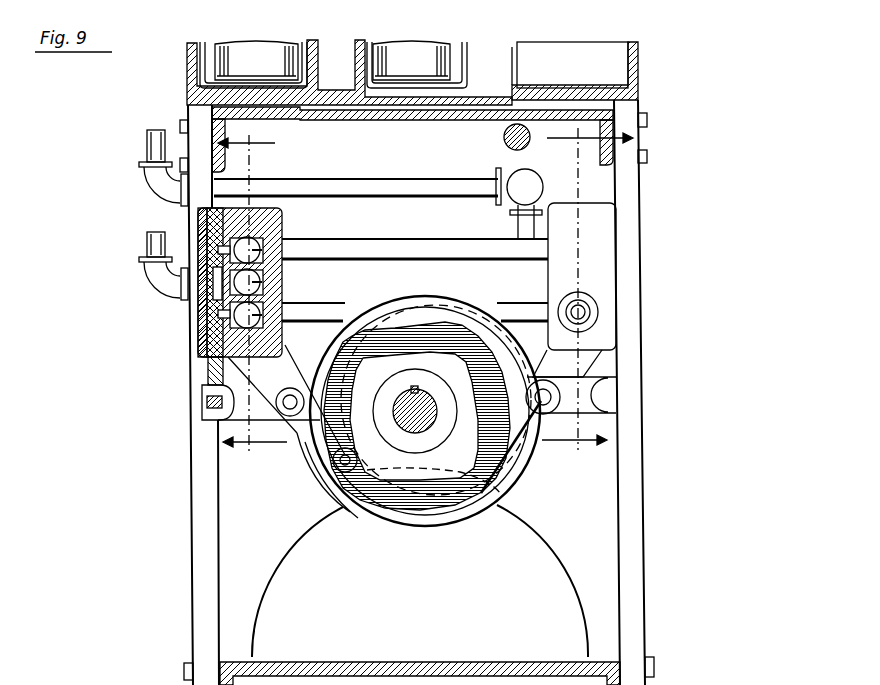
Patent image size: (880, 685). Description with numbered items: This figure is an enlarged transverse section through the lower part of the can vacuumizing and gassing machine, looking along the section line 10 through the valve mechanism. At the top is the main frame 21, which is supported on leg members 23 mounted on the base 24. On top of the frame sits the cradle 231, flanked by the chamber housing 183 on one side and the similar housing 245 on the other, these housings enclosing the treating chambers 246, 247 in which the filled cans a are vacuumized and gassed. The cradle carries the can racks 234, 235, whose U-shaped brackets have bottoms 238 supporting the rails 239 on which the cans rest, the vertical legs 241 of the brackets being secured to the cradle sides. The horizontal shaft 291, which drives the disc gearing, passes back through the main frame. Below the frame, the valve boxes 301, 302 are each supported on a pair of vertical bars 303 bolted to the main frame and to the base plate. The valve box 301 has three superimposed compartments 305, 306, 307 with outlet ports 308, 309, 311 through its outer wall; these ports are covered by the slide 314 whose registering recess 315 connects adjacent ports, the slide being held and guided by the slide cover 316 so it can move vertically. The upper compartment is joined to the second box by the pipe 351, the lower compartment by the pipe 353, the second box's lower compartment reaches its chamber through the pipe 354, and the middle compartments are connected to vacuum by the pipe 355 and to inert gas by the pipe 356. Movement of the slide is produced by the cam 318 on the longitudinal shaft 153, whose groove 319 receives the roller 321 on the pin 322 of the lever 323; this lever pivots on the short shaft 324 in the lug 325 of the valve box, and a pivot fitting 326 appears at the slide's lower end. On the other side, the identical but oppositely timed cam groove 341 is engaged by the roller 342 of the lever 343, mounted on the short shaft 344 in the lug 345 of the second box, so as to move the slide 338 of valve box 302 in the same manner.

The section line 10- 10 is at (425, 303).
The main frame 21 is at (612, 130).
The leg members 23 is at (264, 570).
The base 24 is at (417, 663).
The shaft 153 is at (402, 408).
The chamber housing 183 is at (637, 68).
The cradle 231 is at (360, 41).
The can rack 234 is at (470, 43).
The can rack 235 is at (203, 61).
The bracket bottoms 238 is at (456, 82).
The rails 239 is at (388, 83).
The bracket legs 241 is at (463, 60).
The housing 245 is at (190, 80).
The treating chamber 246 is at (575, 71).
The treating chamber 247 is at (200, 44).
The horizontal shaft 291 is at (505, 142).
The valve box 301 is at (283, 220).
The valve box 302 is at (610, 216).
The vertical bars 303 is at (192, 468).
The upper compartment 305 is at (283, 234).
The middle compartment 306 is at (283, 284).
The lower compartment 307 is at (283, 301).
The outlet port 308 is at (207, 250).
The outlet port 309 is at (205, 296).
The outlet port 311 is at (210, 322).
The slide 314 is at (210, 341).
The registering recess 315 is at (214, 306).
The slide cover 316 is at (216, 356).
The cam 318 is at (340, 496).
The cam groove 319 is at (413, 516).
The roller 321 is at (348, 478).
The pin 322 is at (340, 464).
The lever 323 is at (340, 458).
The short shaft 324 is at (287, 411).
The lug 325 is at (286, 400).
The clevis 326 is at (205, 402).
The slide 338 is at (612, 362).
The cam groove 341 is at (497, 500).
The roller 342 is at (505, 485).
The lever 343 is at (562, 397).
The short shaft 344 is at (543, 407).
The lug 345 is at (567, 363).
The pipe 351 is at (430, 244).
The pipe 353 is at (500, 311).
The pipe 354 is at (581, 305).
The pipe 355 is at (147, 243).
The pipe 356 is at (150, 150).
The filled cans a is at (263, 50).